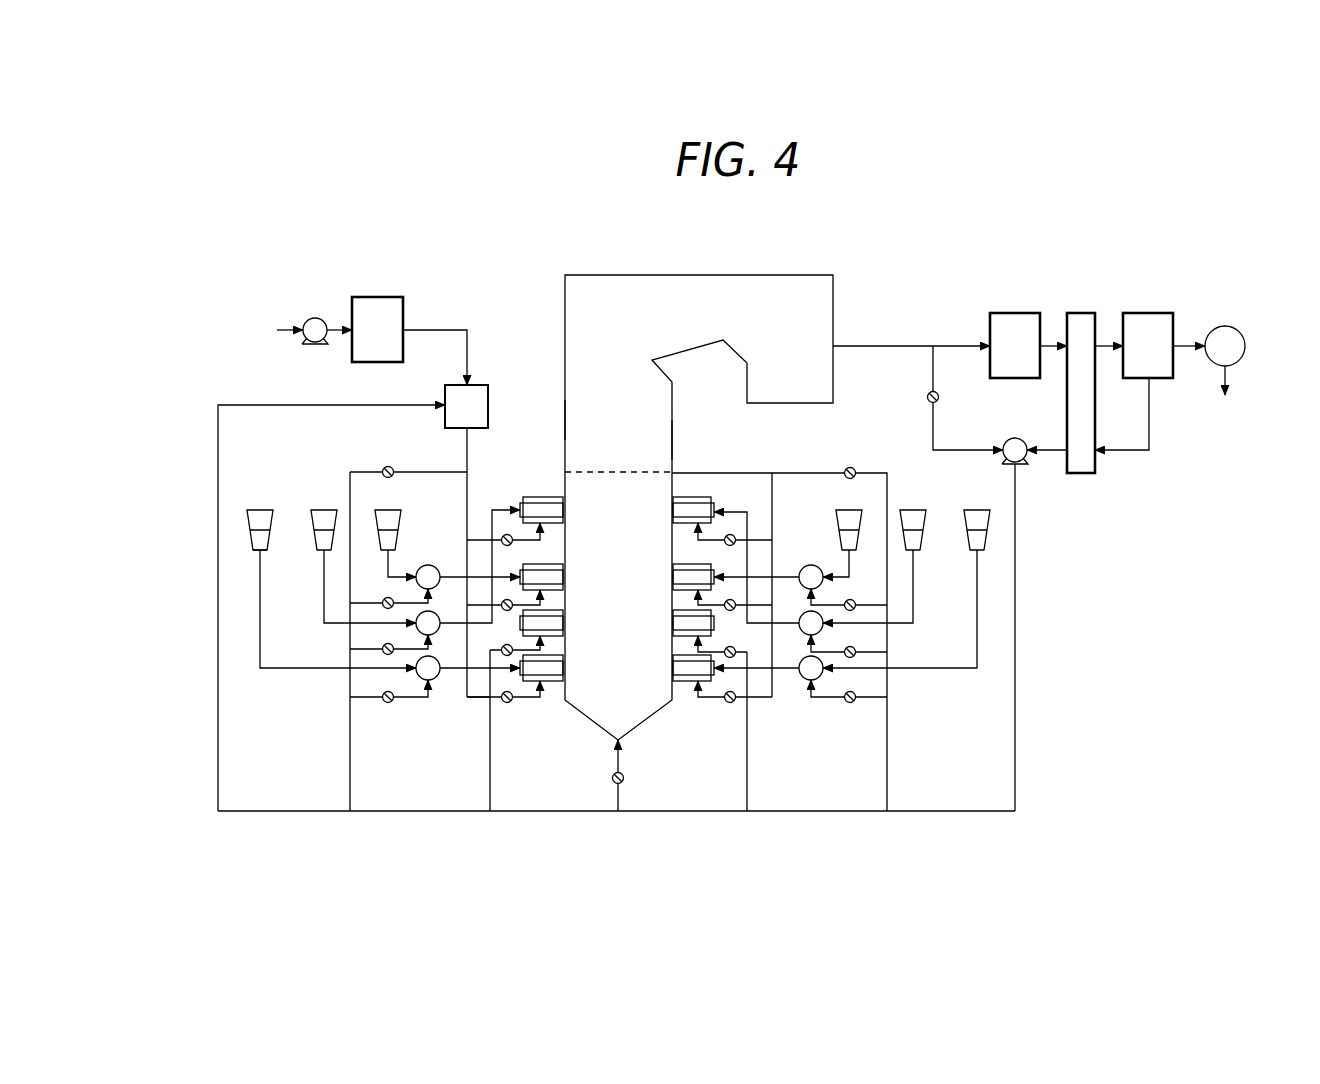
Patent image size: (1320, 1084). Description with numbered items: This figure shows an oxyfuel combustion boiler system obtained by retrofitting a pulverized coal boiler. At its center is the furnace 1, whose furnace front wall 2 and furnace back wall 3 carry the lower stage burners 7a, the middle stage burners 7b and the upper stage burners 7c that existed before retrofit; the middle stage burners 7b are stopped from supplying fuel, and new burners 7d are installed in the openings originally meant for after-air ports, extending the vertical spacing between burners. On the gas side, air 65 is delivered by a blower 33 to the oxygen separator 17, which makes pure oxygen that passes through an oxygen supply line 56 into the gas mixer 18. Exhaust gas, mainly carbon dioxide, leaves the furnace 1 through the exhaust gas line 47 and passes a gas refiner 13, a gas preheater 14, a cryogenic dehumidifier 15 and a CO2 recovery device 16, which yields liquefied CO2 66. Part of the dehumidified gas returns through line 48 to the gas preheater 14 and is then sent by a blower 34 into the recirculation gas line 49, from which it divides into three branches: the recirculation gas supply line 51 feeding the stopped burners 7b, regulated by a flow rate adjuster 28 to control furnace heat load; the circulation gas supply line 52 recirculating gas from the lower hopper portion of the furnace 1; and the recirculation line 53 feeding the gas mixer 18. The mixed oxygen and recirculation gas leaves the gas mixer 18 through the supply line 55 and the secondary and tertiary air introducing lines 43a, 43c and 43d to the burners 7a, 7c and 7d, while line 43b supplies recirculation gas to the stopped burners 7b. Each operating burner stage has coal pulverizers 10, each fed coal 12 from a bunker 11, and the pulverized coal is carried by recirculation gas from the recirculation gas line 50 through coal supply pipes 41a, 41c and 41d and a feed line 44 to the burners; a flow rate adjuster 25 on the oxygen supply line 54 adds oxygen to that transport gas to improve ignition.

The furnace 1 is at (597, 254).
The furnace front wall 2 is at (565, 422).
The furnace back wall 3 is at (673, 437).
The lower stage burners 7a is at (565, 672).
The middle stage burners 7b is at (565, 628).
The upper stage burners 7c is at (565, 583).
The new burners 7d is at (565, 512).
The coal pulverizer 10 is at (432, 565).
The coal bunker 11 is at (262, 510).
The coal 12 is at (265, 540).
The gas refiner 13 is at (1018, 313).
The gas preheater 14 is at (1082, 313).
The cryogenic dehumidifier 15 is at (1150, 313).
The CO2 recovery device 16 is at (1238, 327).
The oxygen separator 17 is at (380, 297).
The gas mixer 18 is at (478, 385).
The flow rate adjuster 25 is at (386, 465).
The flow rate adjuster 28 is at (482, 697).
The blower 33 is at (315, 318).
The blower 34 is at (1008, 438).
The coal supply pipe 41a is at (478, 668).
The coal supply pipe 41c is at (493, 577).
The coal supply pipe 41d is at (495, 505).
The secondary and tertiary air introducing line 43a is at (545, 697).
The secondary and tertiary air introducing line 43b is at (545, 650).
The secondary and tertiary air introducing line 43c is at (545, 603).
The secondary and tertiary air introducing line 43d is at (545, 535).
The coal supply line 44 is at (282, 670).
The exhaust gas line 47 is at (898, 340).
The recirculation line for refined exhaust gas 48 is at (1130, 452).
The recirculation gas line 49 is at (1017, 615).
The recirculation gas line 50 is at (350, 755).
The recirculation gas supply line 51 is at (490, 777).
The circulation gas supply line 52 is at (618, 795).
The recirculation line 53 is at (218, 616).
The oxygen supply line 54 is at (437, 470).
The supply line for mixed gas 55 is at (462, 500).
The oxygen supply line 56 is at (440, 328).
The air 65 is at (247, 330).
The liquefied CO2 66 is at (1225, 418).